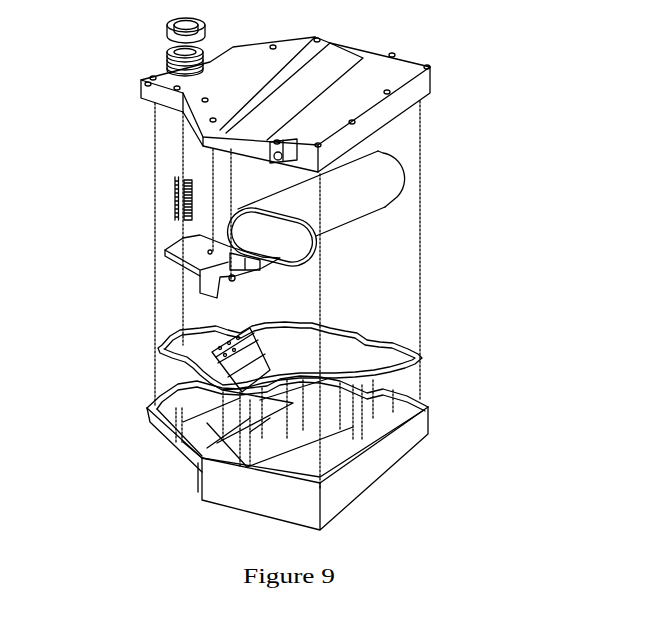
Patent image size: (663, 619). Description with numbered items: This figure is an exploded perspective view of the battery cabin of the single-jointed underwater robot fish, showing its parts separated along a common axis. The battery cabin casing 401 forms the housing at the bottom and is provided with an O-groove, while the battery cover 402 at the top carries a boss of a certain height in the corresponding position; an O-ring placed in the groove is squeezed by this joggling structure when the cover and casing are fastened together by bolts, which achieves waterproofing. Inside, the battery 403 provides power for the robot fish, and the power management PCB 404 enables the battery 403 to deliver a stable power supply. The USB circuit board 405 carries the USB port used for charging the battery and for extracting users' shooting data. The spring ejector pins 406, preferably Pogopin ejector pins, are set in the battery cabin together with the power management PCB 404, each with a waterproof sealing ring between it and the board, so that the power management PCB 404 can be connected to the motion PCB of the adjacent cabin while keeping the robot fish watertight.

The battery cabin casing 401 is at (370, 473).
The battery cover 402 is at (352, 102).
The battery 403 is at (362, 200).
The power management PCB 404 is at (178, 242).
The USB circuit board 405 is at (222, 352).
The spring ejector pin 406 is at (178, 190).